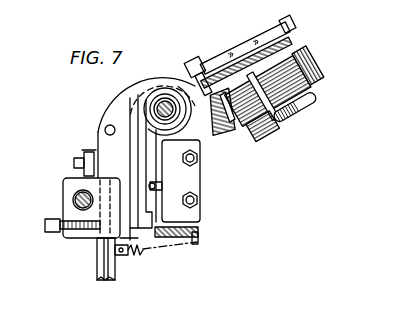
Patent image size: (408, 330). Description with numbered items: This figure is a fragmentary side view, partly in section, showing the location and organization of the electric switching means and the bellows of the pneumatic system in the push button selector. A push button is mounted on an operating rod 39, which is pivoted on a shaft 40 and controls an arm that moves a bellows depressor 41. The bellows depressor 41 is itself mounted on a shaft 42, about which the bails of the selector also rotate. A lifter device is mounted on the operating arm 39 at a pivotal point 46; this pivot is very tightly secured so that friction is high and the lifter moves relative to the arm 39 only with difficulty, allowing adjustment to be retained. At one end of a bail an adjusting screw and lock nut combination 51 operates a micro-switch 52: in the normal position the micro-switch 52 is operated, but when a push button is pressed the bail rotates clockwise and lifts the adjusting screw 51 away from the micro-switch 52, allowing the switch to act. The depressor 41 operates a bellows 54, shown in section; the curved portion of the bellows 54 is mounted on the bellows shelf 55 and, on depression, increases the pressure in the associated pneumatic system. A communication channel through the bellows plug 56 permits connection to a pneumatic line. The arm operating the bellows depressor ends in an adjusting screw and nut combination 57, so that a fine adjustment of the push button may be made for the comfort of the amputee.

The operating rod 39 is at (97, 264).
The shaft 40 is at (72, 197).
The bellows depressor 41 is at (276, 46).
The shaft 42 is at (165, 100).
The pivotal point 46 is at (105, 130).
The adjusting screw and lock nut combination 51 is at (122, 174).
The micro-switch 52 is at (194, 171).
The bellows 54 is at (296, 52).
The bellows shelf 55 is at (316, 75).
The bellows plug 56 is at (255, 130).
The adjusting screw and nut combination 57 is at (189, 63).